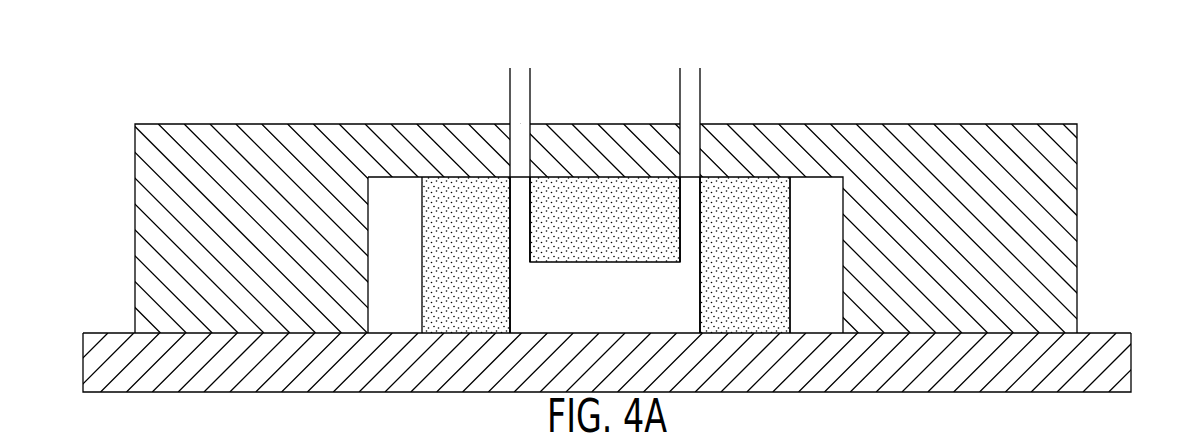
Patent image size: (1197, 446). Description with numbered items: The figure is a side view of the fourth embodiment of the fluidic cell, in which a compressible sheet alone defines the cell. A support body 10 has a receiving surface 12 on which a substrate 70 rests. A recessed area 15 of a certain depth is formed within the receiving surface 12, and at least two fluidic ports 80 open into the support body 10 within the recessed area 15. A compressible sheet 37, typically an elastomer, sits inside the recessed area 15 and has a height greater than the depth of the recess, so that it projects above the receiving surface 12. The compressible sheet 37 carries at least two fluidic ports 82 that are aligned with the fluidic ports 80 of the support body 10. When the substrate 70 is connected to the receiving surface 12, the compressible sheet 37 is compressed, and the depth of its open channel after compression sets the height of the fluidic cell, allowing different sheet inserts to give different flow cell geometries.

The support body 10 is at (1068, 179).
The receiving surface 12 is at (1067, 332).
The recessed area 15 is at (815, 195).
The compressible sheet 37 is at (450, 190).
The substrate 70 is at (1120, 362).
The fluidic ports 80 is at (523, 71).
The fluidic ports 82 is at (520, 195).